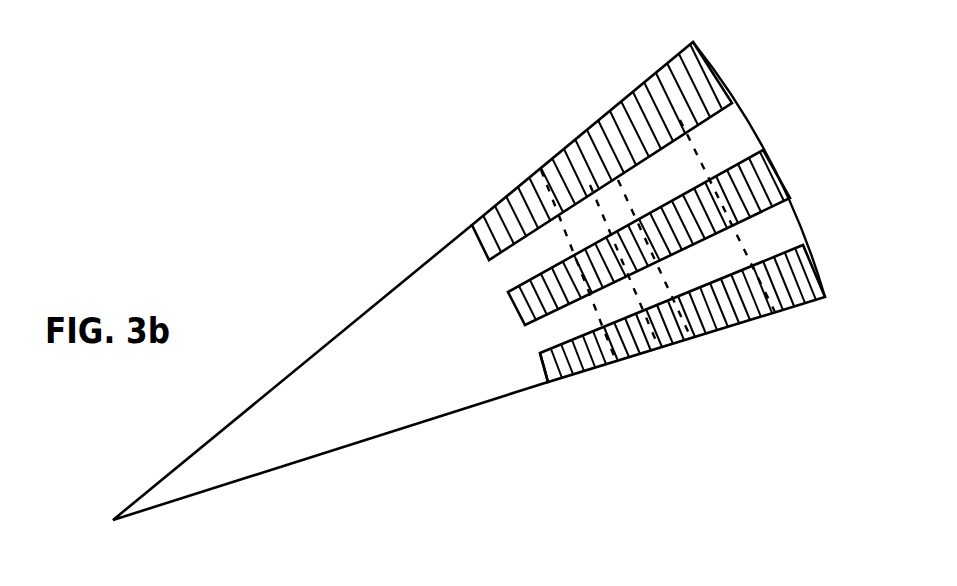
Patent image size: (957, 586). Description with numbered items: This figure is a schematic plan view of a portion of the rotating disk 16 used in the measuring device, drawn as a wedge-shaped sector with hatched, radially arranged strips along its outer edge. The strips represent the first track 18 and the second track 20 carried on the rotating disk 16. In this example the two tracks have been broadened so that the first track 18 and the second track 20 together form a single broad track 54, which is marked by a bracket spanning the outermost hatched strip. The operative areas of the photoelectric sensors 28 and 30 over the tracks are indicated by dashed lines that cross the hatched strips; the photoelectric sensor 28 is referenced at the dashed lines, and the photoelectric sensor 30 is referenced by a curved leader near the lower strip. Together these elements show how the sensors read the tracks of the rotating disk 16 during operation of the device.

The rotating disk 16 is at (322, 422).
The first track 18 is at (830, 312).
The second track 20 is at (695, 350).
The photoelectric sensor 28 is at (750, 240).
The photoelectric sensor 30 is at (600, 307).
The single broad track 54 is at (685, 33).